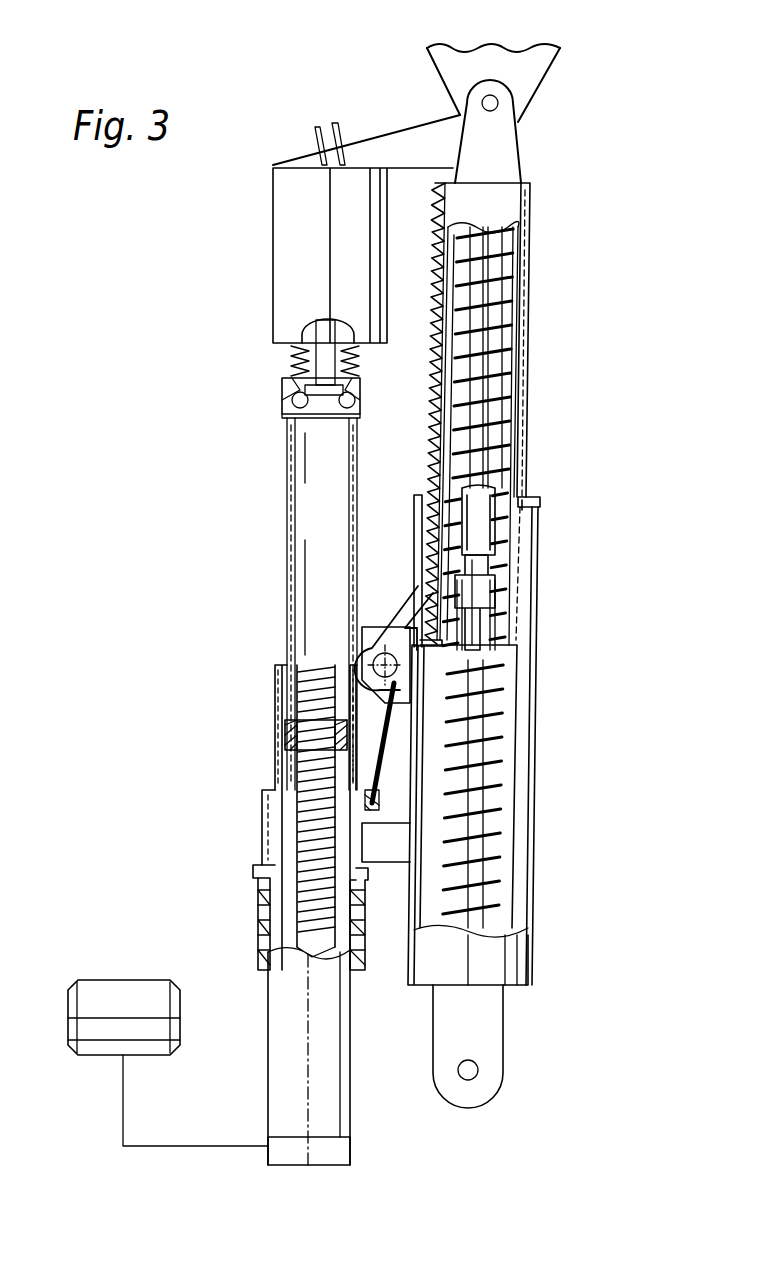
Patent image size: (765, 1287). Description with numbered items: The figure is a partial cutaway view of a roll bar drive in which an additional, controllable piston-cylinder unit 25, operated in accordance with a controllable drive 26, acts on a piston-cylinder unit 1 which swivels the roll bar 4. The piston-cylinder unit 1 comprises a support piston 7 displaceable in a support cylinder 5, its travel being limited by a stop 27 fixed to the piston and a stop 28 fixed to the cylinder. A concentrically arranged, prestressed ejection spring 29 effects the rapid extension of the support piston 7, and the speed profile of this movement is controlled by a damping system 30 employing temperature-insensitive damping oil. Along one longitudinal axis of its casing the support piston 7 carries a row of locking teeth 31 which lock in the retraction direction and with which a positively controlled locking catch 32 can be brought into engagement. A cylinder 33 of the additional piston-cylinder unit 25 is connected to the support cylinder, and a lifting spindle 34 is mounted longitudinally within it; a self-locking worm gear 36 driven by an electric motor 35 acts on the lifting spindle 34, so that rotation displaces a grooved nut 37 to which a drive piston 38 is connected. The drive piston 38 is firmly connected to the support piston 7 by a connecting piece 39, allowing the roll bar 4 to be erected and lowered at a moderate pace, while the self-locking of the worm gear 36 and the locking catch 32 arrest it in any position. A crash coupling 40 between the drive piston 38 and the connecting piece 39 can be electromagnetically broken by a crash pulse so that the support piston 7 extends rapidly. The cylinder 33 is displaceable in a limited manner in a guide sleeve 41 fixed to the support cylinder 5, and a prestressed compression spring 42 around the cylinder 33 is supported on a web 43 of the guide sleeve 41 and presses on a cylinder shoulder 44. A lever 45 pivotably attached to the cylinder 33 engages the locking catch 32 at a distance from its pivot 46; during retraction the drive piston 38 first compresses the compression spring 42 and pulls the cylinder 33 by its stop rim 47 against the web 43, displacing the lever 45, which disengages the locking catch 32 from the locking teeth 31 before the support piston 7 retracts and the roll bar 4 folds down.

The piston-cylinder unit 1 is at (555, 490).
The roll bar 4 is at (470, 50).
The support cylinder 5 is at (541, 858).
The support piston 7 is at (528, 300).
The additional piston-cylinder unit 25 is at (277, 690).
The controllable drive 26 is at (222, 945).
The stop 27 is at (540, 522).
The stop 28 is at (528, 495).
The ejection spring 29 is at (515, 752).
The damping system 30 is at (483, 590).
The row of locking teeth 31 is at (437, 348).
The locking catch 32 is at (405, 600).
The cylinder 33 is at (330, 1073).
The lifting spindle 34 is at (305, 788).
The electric motor 35 is at (105, 985).
The self-locking worm gear 36 is at (282, 1152).
The grooved nut 37 is at (290, 734).
The drive piston 38 is at (288, 508).
The connecting piece 39 is at (395, 148).
The crash coupling 40 is at (288, 406).
The guide sleeve 41 is at (365, 840).
The compression spring 42 is at (258, 945).
The web 43 is at (262, 865).
The cylinder shoulder 44 is at (358, 968).
The lever 45 is at (387, 750).
The pivot 46 is at (385, 652).
The stop rim 47 is at (258, 878).